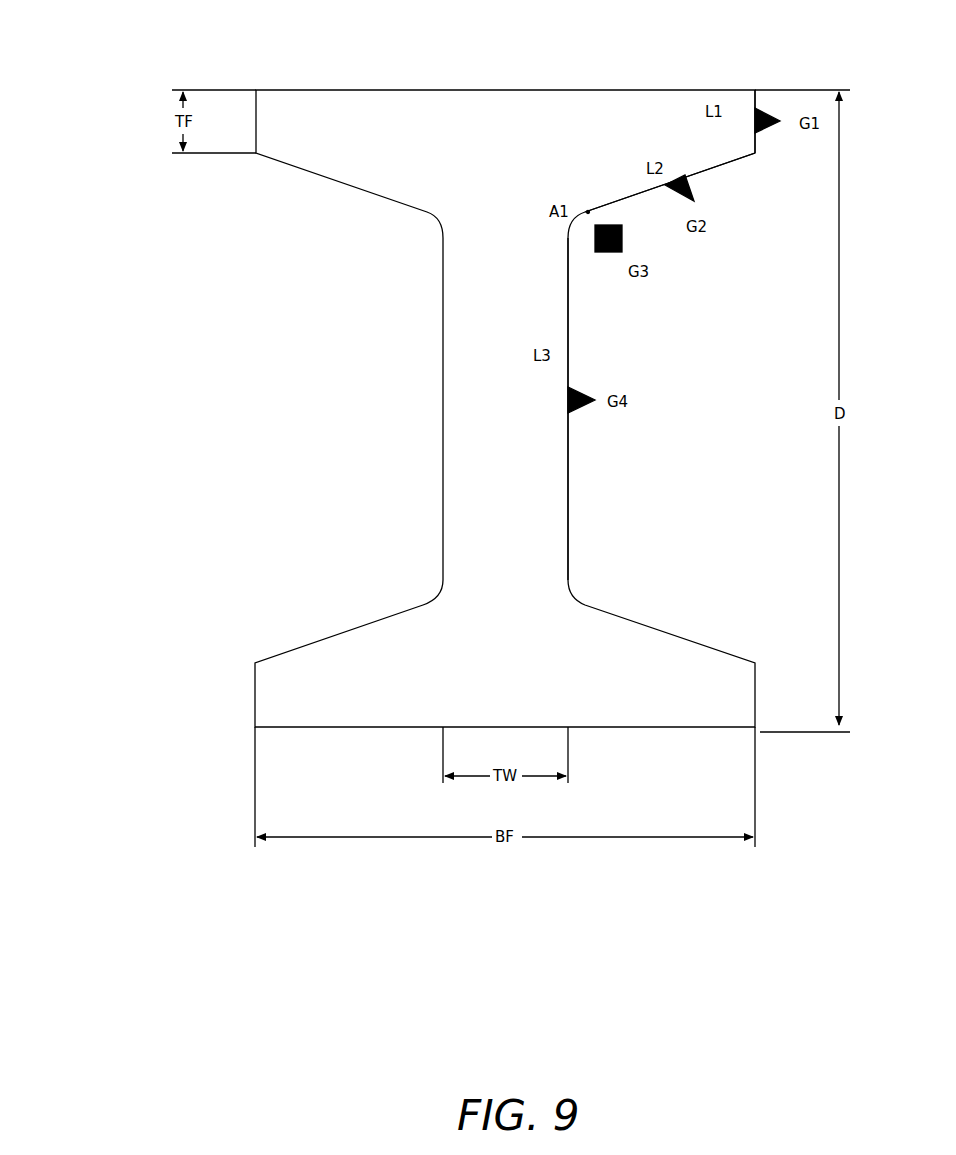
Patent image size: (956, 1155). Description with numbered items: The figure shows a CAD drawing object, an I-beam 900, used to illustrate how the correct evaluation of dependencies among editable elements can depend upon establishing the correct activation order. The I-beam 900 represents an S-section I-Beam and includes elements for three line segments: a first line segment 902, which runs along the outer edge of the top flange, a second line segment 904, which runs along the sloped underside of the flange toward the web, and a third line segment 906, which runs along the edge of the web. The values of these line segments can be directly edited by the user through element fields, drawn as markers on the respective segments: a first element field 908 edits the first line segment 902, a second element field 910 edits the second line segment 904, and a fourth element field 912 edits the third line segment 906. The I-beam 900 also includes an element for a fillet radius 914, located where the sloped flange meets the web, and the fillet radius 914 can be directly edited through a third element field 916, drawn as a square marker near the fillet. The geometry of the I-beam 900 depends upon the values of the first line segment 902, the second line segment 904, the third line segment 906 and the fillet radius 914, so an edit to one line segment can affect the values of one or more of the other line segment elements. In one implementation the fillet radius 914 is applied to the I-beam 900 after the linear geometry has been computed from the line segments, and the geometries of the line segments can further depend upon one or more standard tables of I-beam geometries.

The I-beam 900 is at (143, 52).
The line segment L1 902 is at (757, 121).
The line segment L2 904 is at (693, 172).
The line segment L3 906 is at (568, 373).
The element field G1 908 is at (770, 131).
The element field G2 910 is at (689, 191).
The element field G4 912 is at (583, 408).
The fillet radius 914 is at (588, 212).
The element field G3 916 is at (608, 256).